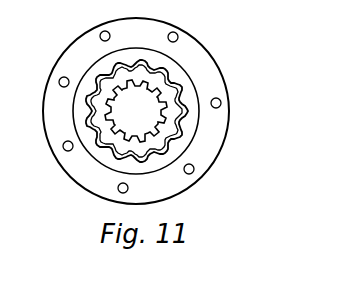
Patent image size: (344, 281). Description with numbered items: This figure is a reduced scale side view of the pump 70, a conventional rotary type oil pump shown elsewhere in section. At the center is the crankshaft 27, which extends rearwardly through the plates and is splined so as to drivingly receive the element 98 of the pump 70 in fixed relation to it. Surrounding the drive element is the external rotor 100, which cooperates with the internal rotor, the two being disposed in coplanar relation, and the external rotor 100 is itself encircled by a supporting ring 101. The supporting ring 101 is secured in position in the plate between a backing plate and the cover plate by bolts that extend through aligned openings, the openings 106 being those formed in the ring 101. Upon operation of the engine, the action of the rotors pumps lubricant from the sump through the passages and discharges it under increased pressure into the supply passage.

The pump 70 is at (242, 172).
The supporting ring 101 is at (228, 128).
The openings 106 is at (221, 103).
The external rotor 100 is at (142, 59).
The element 98 is at (175, 87).
The crankshaft 27 is at (136, 111).